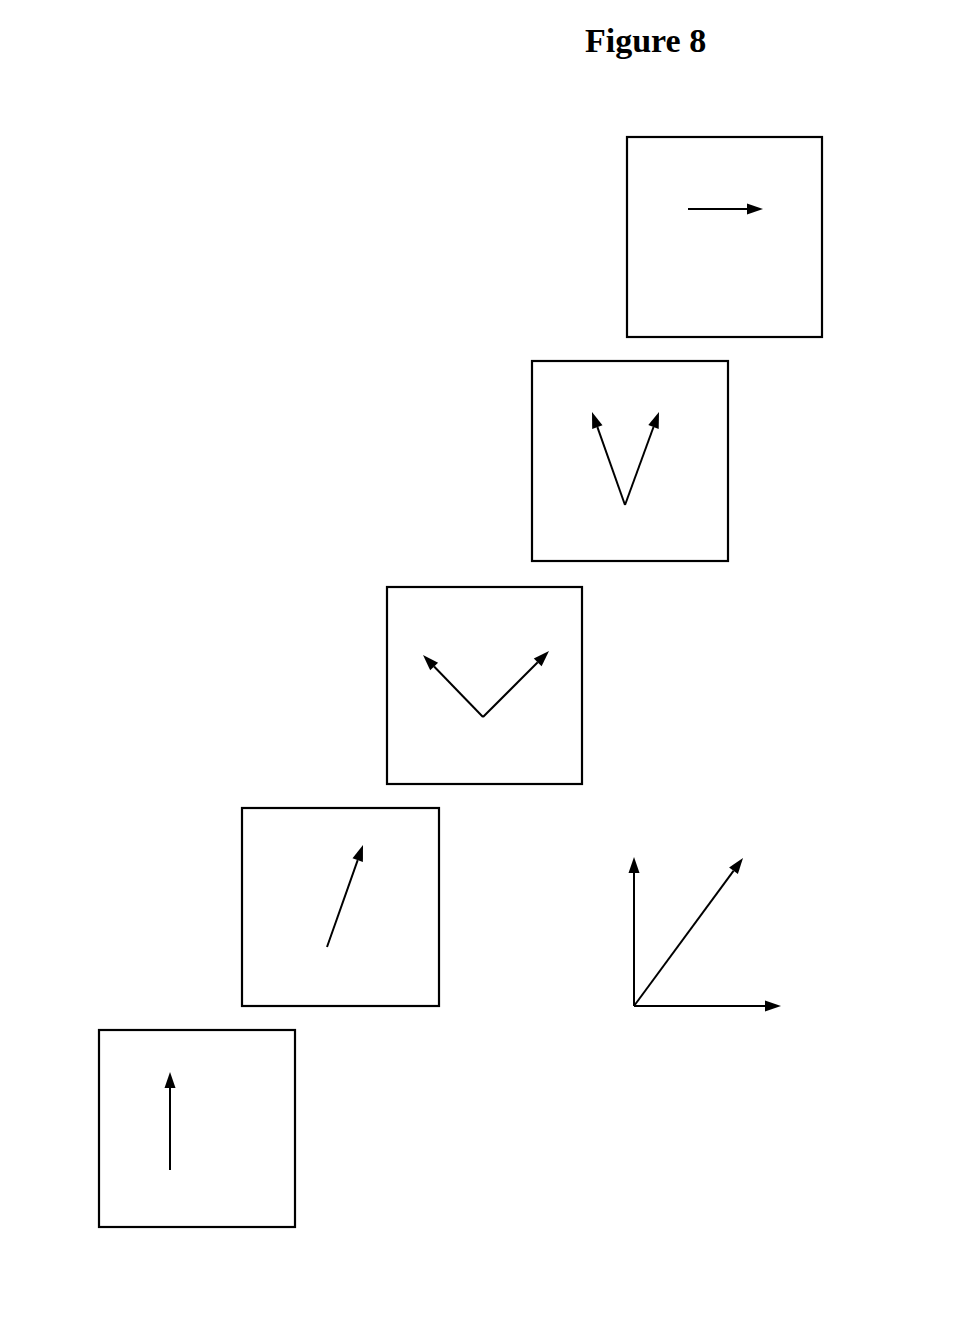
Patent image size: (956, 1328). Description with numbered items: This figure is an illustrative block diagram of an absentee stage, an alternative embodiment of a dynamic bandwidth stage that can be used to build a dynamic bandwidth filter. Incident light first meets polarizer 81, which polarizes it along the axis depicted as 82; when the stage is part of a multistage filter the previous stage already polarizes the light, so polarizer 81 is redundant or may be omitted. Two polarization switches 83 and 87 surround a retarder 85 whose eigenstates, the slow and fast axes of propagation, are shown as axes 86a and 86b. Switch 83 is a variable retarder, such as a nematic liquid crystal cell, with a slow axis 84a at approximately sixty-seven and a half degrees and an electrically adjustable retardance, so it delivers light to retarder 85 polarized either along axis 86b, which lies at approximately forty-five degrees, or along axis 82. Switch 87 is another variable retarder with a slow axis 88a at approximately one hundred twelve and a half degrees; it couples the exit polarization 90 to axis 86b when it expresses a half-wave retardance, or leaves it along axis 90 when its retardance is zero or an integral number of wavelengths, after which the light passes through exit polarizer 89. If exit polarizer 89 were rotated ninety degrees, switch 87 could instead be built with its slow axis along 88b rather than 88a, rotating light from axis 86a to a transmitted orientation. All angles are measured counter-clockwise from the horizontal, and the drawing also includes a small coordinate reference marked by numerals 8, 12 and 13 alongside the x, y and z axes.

The polarizer 81 is at (99, 1153).
The polarization axis 82 is at (166, 1107).
The polarization switch 83 is at (242, 930).
The slow axis 84a is at (350, 883).
The retarder 85 is at (387, 713).
The eigenstate axis 86a is at (466, 698).
The slow axis 86b is at (510, 697).
The polarization switch 87 is at (532, 487).
The slow axis 88a is at (606, 447).
The alternative slow axis 88b is at (648, 447).
The exit polarizer 89 is at (627, 252).
The exit polarization axis 90 is at (700, 211).
The x axis 8 is at (633, 918).
The y axis 12 is at (670, 1008).
The z axis 13 is at (687, 935).